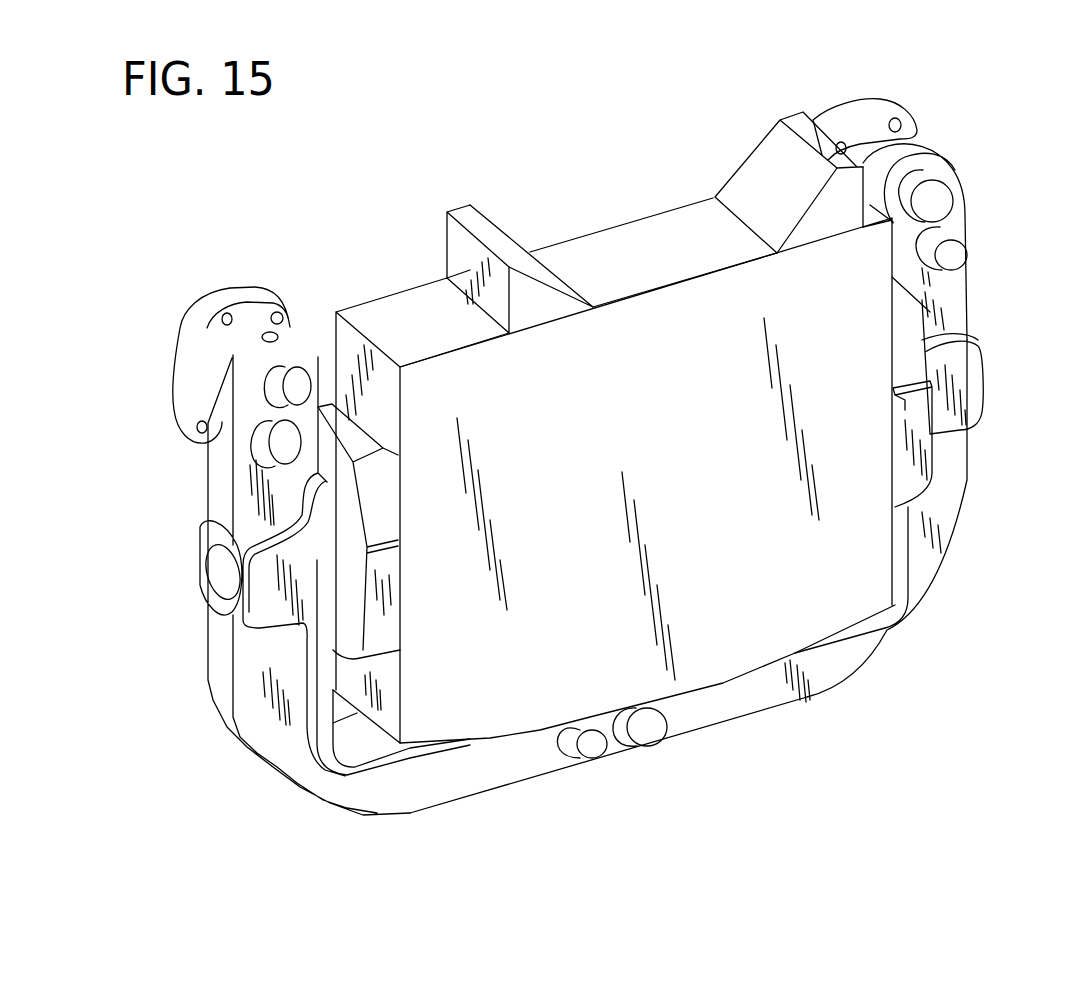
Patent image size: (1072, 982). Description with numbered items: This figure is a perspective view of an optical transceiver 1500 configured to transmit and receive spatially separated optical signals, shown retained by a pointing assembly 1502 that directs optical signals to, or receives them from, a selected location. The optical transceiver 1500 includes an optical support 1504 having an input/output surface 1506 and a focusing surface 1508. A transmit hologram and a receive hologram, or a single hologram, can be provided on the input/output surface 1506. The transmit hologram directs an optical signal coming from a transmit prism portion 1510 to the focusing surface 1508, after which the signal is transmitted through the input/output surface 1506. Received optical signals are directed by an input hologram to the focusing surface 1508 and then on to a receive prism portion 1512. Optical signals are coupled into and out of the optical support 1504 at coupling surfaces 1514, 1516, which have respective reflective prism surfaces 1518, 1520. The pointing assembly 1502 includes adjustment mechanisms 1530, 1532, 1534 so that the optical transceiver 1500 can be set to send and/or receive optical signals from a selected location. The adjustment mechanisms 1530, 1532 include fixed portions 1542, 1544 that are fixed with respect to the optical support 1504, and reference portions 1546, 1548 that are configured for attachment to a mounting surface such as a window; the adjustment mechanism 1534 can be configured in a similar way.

The optical transceiver 1500 is at (604, 584).
The pointing assembly 1502 is at (297, 786).
The optical support 1504 is at (848, 312).
The input/output surface 1506 is at (383, 298).
The focusing surface 1508 is at (420, 750).
The transmit prism portion 1510 is at (478, 196).
The receive prism portion 1512 is at (776, 100).
The coupling surface 1514 is at (814, 116).
The coupling surface 1516 is at (457, 245).
The reflective prism surface 1518 is at (768, 185).
The reflective prism surface 1520 is at (527, 257).
The adjustment mechanism 1530 is at (935, 196).
The adjustment mechanism 1532 is at (193, 348).
The adjustment mechanism 1534 is at (678, 745).
The fixed portion 1542 is at (978, 220).
The fixed portion 1544 is at (205, 433).
The reference portion 1546 is at (900, 103).
The reference portion 1548 is at (222, 297).